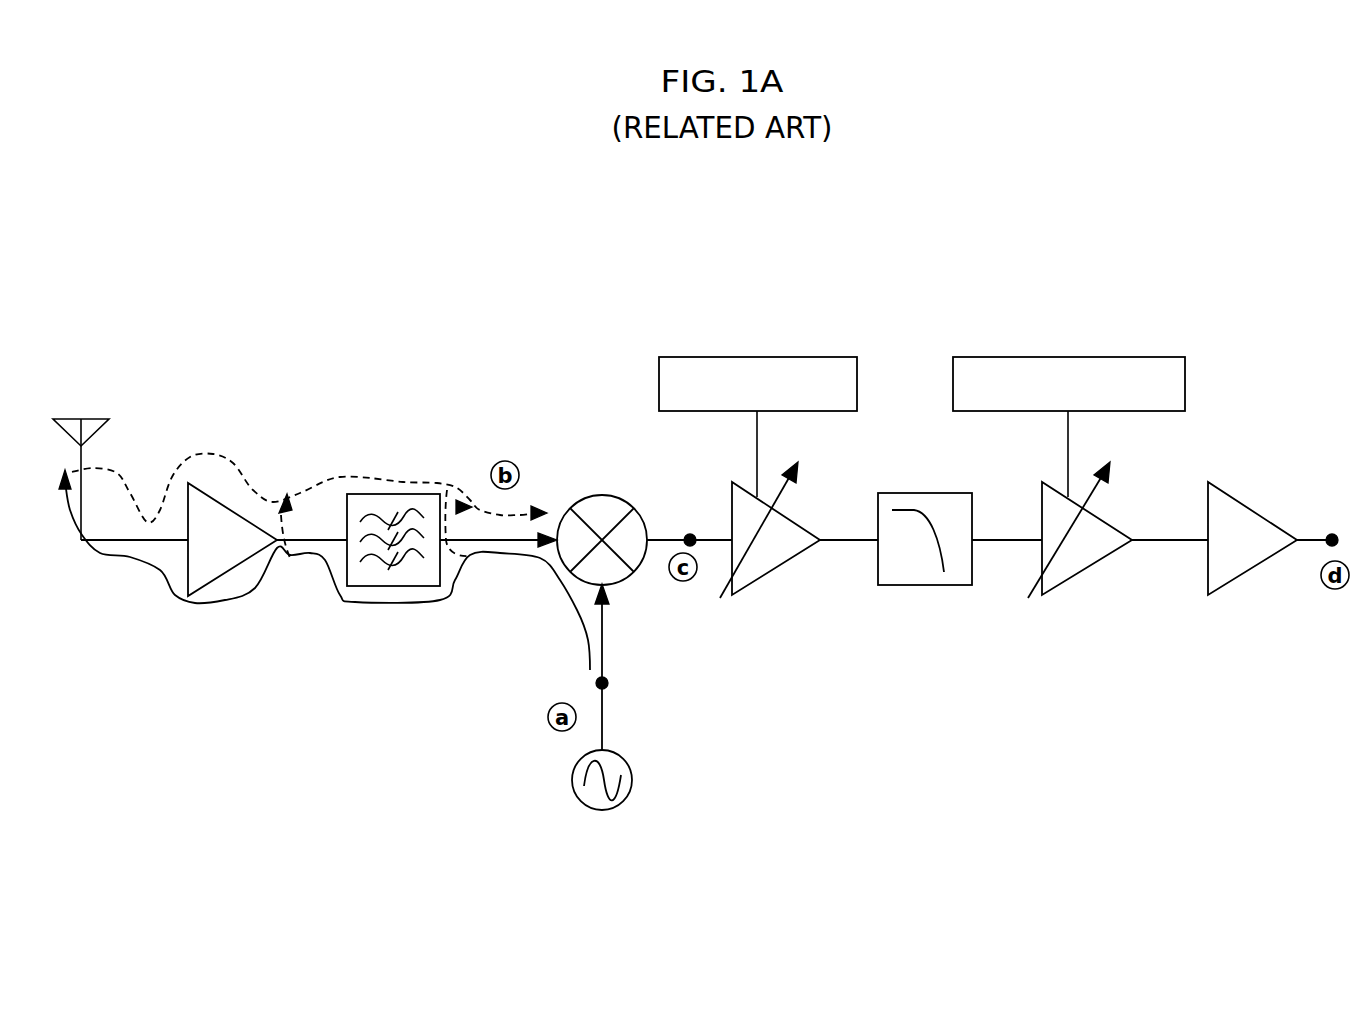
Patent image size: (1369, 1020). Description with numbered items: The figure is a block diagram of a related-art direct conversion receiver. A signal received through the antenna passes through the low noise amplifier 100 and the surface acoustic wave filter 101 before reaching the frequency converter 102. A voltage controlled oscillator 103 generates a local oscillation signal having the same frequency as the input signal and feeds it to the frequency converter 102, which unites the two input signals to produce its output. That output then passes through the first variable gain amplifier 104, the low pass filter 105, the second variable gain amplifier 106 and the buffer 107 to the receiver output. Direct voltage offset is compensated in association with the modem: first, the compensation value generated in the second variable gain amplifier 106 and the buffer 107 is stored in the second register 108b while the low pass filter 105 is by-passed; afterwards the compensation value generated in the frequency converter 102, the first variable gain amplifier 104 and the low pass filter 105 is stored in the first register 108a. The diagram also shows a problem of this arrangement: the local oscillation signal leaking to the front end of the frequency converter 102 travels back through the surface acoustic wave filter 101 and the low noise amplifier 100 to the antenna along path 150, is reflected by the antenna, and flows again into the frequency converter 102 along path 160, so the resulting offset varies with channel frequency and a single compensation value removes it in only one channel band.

The low noise amplifier 100 is at (231, 586).
The surface acoustic wave filter 101 is at (404, 494).
The frequency converter 102 is at (600, 495).
The voltage controlled oscillator 103 is at (635, 783).
The first variable gain amplifier 104 is at (757, 583).
The low pass filter 105 is at (943, 586).
The second variable gain amplifier 106 is at (1066, 586).
The buffer 107 is at (1226, 586).
The first register 108a is at (817, 356).
The second register 108b is at (1135, 356).
The path 150 is at (178, 601).
The path 160 is at (212, 455).